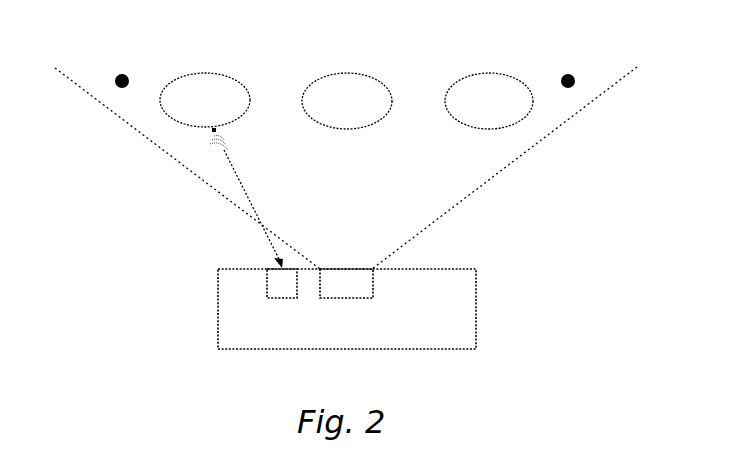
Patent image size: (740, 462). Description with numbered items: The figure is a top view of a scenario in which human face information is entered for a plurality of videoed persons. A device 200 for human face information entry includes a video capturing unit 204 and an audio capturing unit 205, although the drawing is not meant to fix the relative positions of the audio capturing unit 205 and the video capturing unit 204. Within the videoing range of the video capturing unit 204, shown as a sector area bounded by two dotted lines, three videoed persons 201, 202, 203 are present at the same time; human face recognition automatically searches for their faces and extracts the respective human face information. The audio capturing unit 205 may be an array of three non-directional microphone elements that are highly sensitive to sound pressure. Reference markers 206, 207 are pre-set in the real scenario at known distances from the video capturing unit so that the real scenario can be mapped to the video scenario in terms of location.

The device for human face information entry 200 is at (218, 313).
The videoed person 201 is at (208, 73).
The videoed person 202 is at (362, 73).
The videoed person 203 is at (508, 72).
The video capturing unit 204 is at (355, 300).
The audio capturing unit 205 is at (278, 300).
The reference marker 206 is at (128, 75).
The reference marker 207 is at (575, 75).